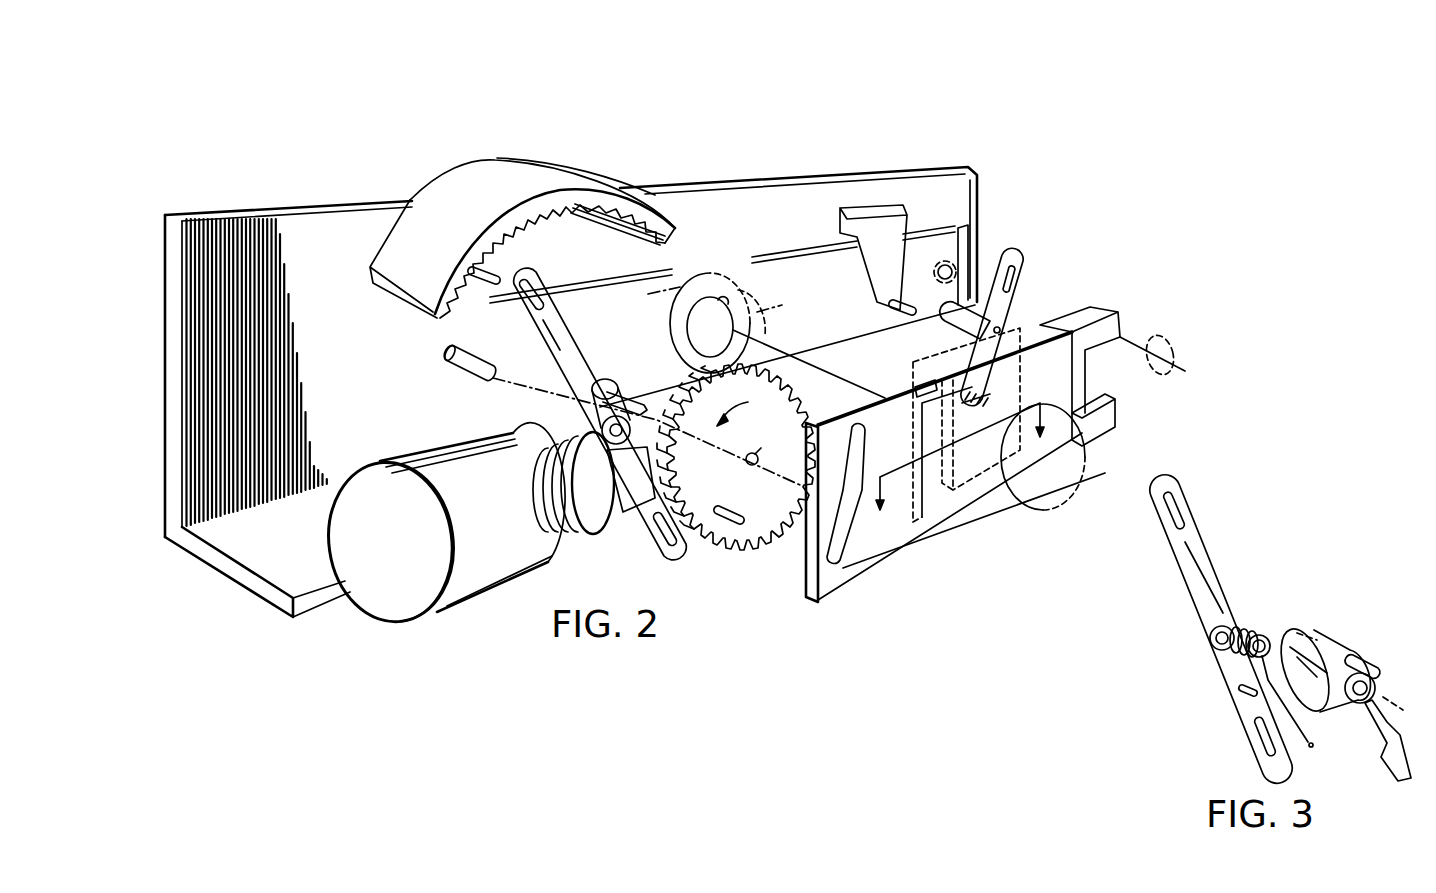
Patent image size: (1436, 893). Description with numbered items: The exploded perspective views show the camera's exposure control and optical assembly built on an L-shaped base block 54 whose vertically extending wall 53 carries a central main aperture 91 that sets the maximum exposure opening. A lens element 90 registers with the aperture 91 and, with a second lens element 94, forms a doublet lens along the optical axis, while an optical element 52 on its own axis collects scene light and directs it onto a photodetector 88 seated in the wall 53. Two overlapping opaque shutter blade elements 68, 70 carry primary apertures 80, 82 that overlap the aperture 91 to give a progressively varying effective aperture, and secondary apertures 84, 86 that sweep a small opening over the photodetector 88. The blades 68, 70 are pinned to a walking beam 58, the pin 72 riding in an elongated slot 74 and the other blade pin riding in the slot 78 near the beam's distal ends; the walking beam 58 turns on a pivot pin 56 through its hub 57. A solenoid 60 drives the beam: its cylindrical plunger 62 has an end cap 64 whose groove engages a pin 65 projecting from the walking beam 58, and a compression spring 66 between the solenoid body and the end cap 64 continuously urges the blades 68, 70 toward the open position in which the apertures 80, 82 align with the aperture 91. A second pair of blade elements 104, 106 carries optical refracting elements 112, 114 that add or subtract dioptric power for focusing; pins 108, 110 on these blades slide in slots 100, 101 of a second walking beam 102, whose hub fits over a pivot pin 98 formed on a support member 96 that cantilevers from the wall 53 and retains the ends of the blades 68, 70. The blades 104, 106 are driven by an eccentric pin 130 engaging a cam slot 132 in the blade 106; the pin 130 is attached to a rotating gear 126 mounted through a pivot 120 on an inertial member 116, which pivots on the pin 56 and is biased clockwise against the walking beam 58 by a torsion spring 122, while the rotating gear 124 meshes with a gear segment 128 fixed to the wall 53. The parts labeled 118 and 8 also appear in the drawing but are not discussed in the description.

In FIG. 2, the section line 8- 8 is at (958, 444).
In FIG. 2, the optical element 52 is at (1170, 347).
In FIG. 2, the vertically extending wall 53 is at (975, 198).
In FIG. 2, the L-shaped base block 54 is at (800, 171).
In FIG. 2, the pivot pin 56 is at (480, 370).
In FIG. 3, the hub 57 is at (1227, 624).
In FIG. 2, the walking beam 58 is at (533, 336).
In FIG. 3, the walking beam 58 is at (1228, 555).
In FIG. 2, the solenoid 60 is at (488, 599).
In FIG. 2, the cylindrical plunger 62 is at (596, 487).
In FIG. 2, the end cap 64 is at (628, 498).
In FIG. 3, the pin 65 is at (1241, 689).
In FIG. 2, the compression spring 66 is at (586, 533).
In FIG. 2, the shutter blade element 68 is at (604, 295).
In FIG. 2, the shutter blade element 70 is at (662, 282).
In FIG. 2, the pin 72 is at (493, 270).
In FIG. 2, the elongated slot 74 is at (540, 298).
In FIG. 3, the elongated slot 74 is at (1173, 506).
In FIG. 2, the elongated slot 78 is at (667, 533).
In FIG. 3, the elongated slot 78 is at (1262, 733).
In FIG. 2, the primary aperture 80 is at (731, 304).
In FIG. 2, the primary aperture 82 is at (712, 322).
In FIG. 2, the secondary aperture 84 is at (941, 279).
In FIG. 2, the secondary aperture 86 is at (952, 272).
In FIG. 2, the photodetector 88 is at (937, 270).
In FIG. 2, the lens element 90 is at (715, 282).
In FIG. 2, the main aperture 91 is at (703, 297).
In FIG. 2, the lens element 94 is at (1062, 494).
In FIG. 2, the support member 96 is at (889, 210).
In FIG. 2, the pivot pin 98 is at (898, 312).
In FIG. 2, the slot 100 is at (1030, 270).
In FIG. 2, the slot 101 is at (989, 394).
In FIG. 2, the walking beam 102 is at (1007, 317).
In FIG. 2, the blade element 104 is at (923, 380).
In FIG. 2, the blade element 106 is at (892, 395).
In FIG. 2, the pin 108 is at (1082, 306).
In FIG. 2, the pin 110 is at (1085, 396).
In FIG. 2, the optical refracting element 112 is at (1022, 388).
In FIG. 2, the optical refracting element 114 is at (916, 437).
In FIG. 2, the inertial member 116 is at (603, 380).
In FIG. 3, the inertial member 116 is at (1322, 637).
In FIG. 3, the ring bracket 118 is at (1368, 690).
In FIG. 2, the pivot 120 is at (616, 404).
In FIG. 3, the pivot 120 is at (1366, 666).
In FIG. 3, the torsion spring 122 is at (1256, 642).
In FIG. 2, the rotating gear 124 is at (788, 388).
In FIG. 2, the rotating gear 126 is at (762, 440).
In FIG. 2, the gear segment 128 is at (487, 164).
In FIG. 2, the eccentric pin 130 is at (735, 510).
In FIG. 2, the cam slot 132 is at (847, 523).